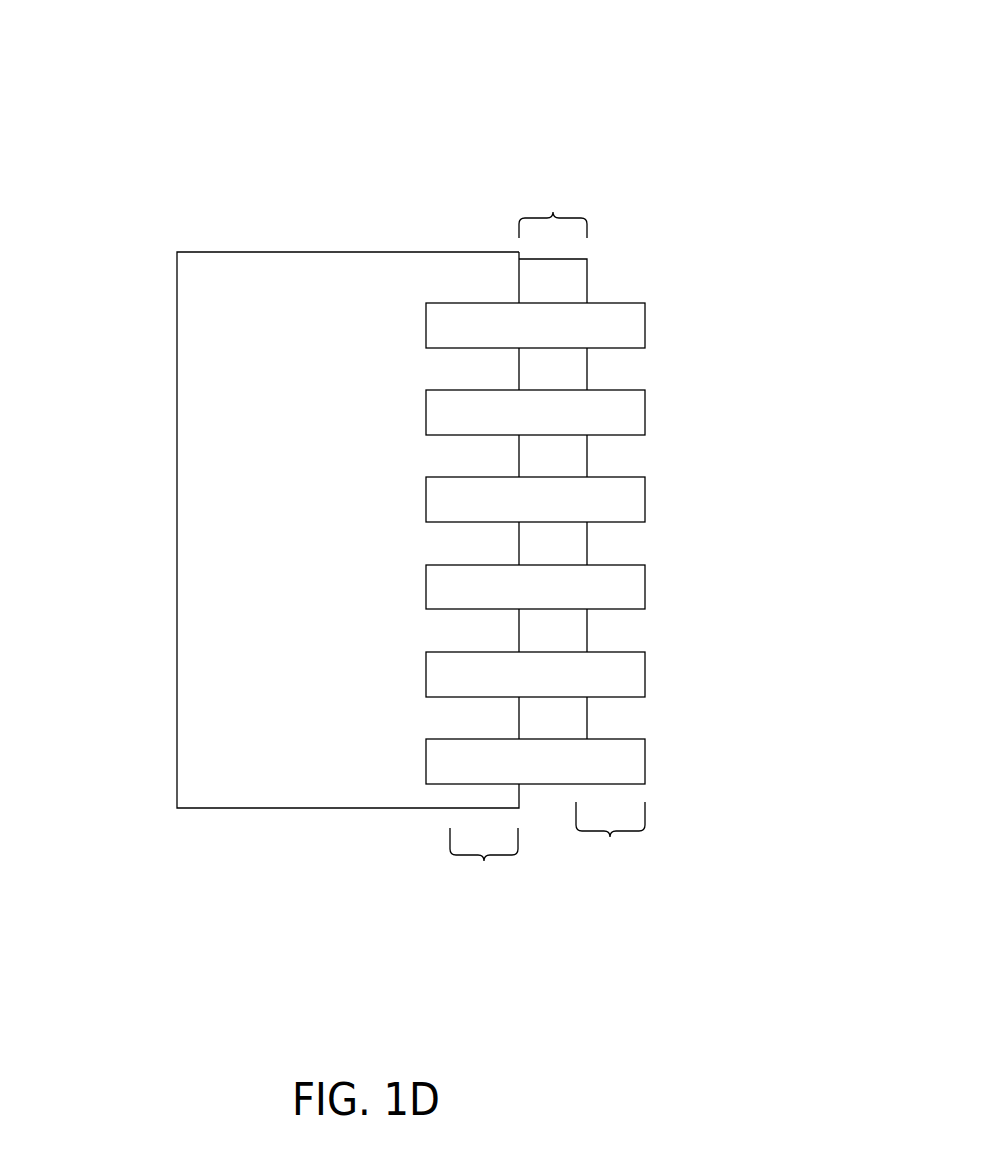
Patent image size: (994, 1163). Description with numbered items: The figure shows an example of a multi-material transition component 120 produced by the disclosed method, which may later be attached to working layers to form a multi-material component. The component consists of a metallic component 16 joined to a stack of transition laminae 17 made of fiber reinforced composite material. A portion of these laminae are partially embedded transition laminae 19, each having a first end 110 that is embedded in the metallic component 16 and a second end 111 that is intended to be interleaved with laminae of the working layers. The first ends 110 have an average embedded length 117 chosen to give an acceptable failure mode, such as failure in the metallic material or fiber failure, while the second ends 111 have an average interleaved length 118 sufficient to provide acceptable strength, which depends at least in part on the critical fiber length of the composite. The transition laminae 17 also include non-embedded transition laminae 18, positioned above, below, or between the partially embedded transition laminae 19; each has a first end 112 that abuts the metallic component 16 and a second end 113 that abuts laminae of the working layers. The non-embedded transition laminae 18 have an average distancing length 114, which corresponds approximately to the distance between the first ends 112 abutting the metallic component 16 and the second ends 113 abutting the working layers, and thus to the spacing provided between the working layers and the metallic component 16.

The multi-material transition component 120 is at (132, 115).
The metallic component 16 is at (242, 295).
The transition laminae 17 is at (543, 786).
The non-embedded transition laminae 18 is at (555, 370).
The partially embedded transition laminae 19 is at (485, 412).
The first end 110 is at (425, 408).
The second end 111 is at (635, 495).
The first end 112 is at (518, 368).
The second end 113 is at (587, 633).
The distancing length 114 is at (553, 205).
The embedded length 117 is at (484, 870).
The interleaved length 118 is at (610, 844).